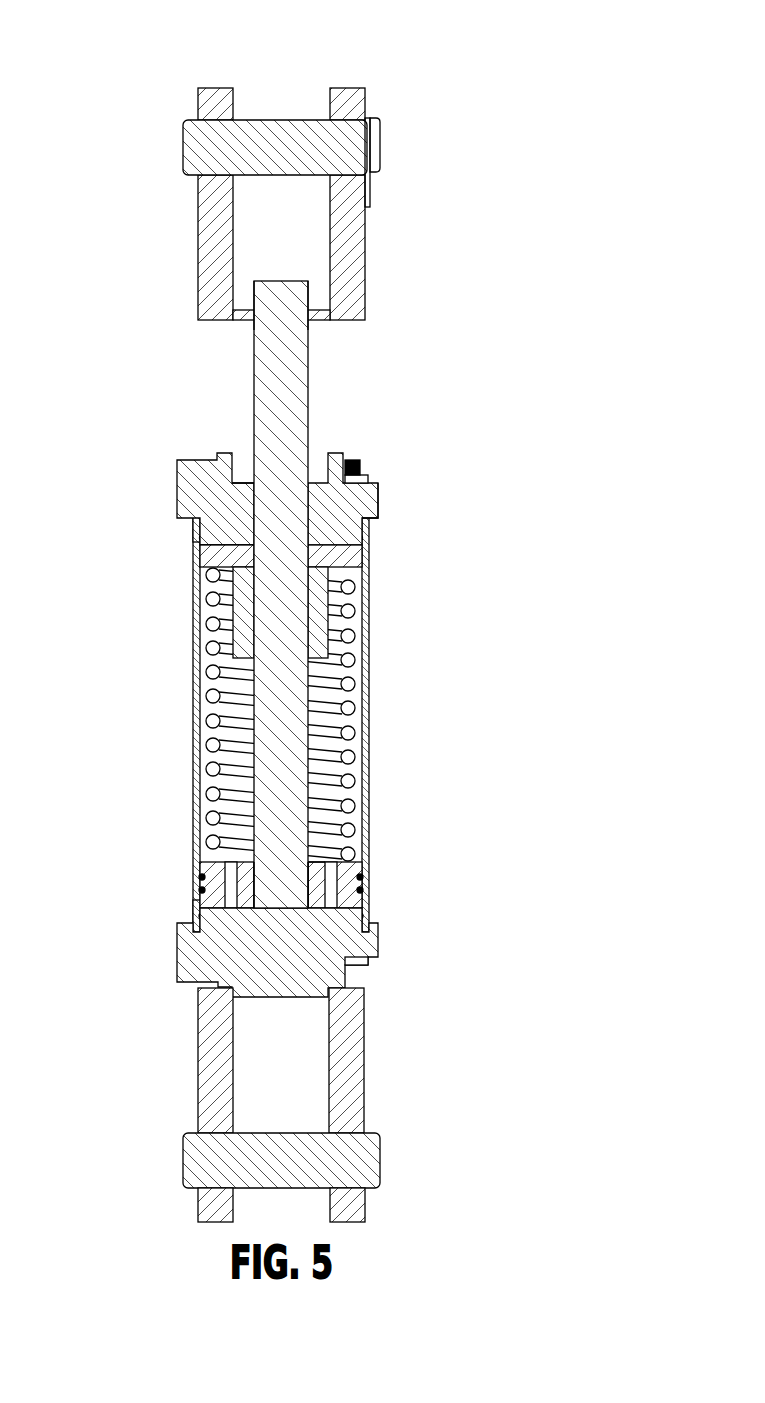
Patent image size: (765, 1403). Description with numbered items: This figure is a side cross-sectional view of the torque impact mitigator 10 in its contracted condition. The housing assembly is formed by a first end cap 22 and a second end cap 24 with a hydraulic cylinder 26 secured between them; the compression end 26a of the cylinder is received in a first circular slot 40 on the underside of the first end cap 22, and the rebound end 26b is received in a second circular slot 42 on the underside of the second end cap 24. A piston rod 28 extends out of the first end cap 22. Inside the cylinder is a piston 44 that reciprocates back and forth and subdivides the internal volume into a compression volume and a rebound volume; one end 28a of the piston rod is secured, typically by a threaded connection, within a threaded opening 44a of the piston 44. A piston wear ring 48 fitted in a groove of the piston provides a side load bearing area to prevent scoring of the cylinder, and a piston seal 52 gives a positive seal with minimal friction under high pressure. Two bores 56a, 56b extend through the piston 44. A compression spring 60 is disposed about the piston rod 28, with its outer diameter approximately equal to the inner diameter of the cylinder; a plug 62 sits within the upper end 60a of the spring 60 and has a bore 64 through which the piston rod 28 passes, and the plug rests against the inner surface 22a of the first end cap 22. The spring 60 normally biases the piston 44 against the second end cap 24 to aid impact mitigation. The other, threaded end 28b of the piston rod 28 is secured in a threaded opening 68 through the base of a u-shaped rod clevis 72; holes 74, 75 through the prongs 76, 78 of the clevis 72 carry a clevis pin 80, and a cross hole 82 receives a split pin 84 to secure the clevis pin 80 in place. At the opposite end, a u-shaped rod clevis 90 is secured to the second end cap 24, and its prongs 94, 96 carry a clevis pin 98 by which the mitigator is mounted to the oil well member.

The torque impact mitigator 10 is at (308, 651).
The first end cap 22 is at (312, 469).
The inner surface of the first end cap 22a is at (223, 553).
The second end cap 24 is at (357, 945).
The hydraulic cylinder 26 is at (266, 711).
The compression end of hydraulic cylinder 26a is at (195, 525).
The rebound end of hydraulic cylinder 26b is at (197, 923).
The piston rod 28 is at (286, 594).
The end of the piston rod 28a is at (252, 873).
The threaded end of the piston rod 28b is at (283, 300).
The first circular slot 40 is at (367, 517).
The second circular slot 42 is at (367, 922).
The piston 44 is at (279, 921).
The threaded opening of the piston 44a is at (307, 867).
The piston wear ring 48 is at (200, 893).
The piston seal 52 is at (363, 878).
The bore 56a is at (230, 903).
The bore 56b is at (330, 903).
The compression spring 60 is at (336, 703).
The upper end of the spring 60a is at (337, 583).
The plug 62 is at (207, 560).
The bore of the plug 64 is at (257, 606).
The threaded opening 68 is at (307, 306).
The u-shaped rod clevis 72 is at (281, 194).
The hole 74 is at (218, 120).
The hole 75 is at (345, 122).
The prong 76 is at (212, 240).
The prong 78 is at (347, 202).
The clevis pin 80 is at (217, 150).
The cross hole 82 is at (370, 133).
The split pin 84 is at (370, 207).
The u-shaped rod clevis 90 is at (347, 1087).
The prong 94 is at (207, 1208).
The prong 96 is at (353, 1212).
The clevis pin 98 is at (210, 1163).